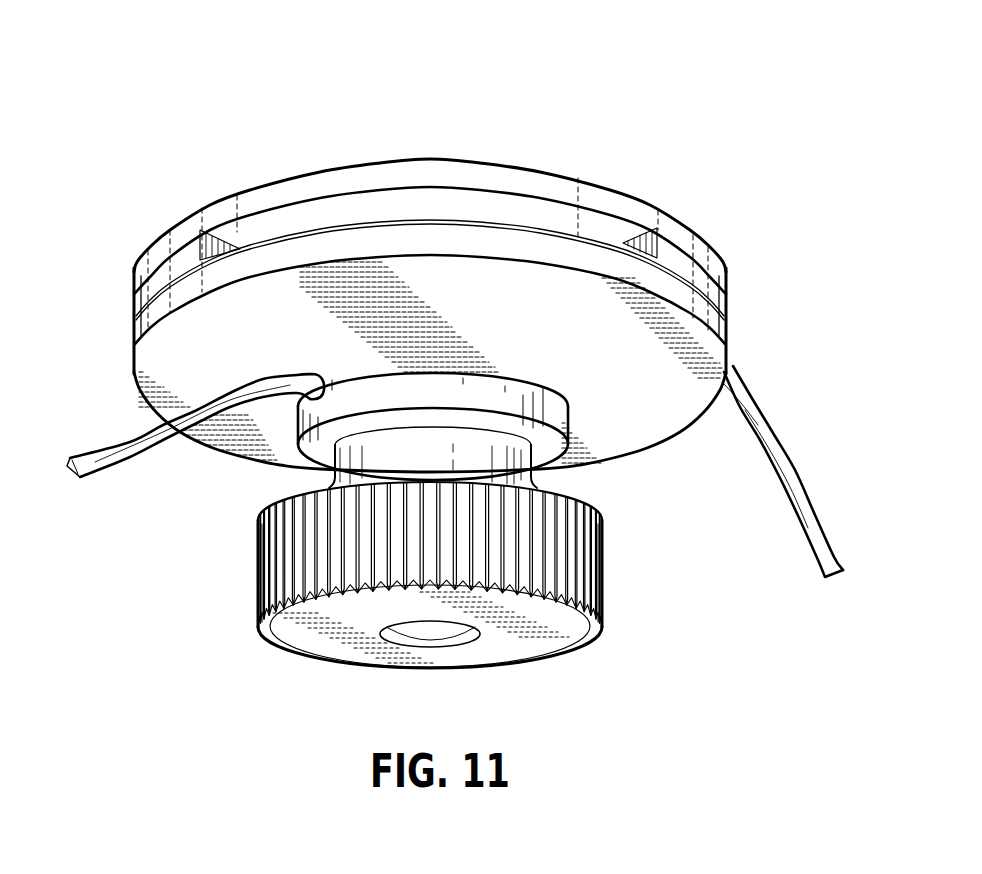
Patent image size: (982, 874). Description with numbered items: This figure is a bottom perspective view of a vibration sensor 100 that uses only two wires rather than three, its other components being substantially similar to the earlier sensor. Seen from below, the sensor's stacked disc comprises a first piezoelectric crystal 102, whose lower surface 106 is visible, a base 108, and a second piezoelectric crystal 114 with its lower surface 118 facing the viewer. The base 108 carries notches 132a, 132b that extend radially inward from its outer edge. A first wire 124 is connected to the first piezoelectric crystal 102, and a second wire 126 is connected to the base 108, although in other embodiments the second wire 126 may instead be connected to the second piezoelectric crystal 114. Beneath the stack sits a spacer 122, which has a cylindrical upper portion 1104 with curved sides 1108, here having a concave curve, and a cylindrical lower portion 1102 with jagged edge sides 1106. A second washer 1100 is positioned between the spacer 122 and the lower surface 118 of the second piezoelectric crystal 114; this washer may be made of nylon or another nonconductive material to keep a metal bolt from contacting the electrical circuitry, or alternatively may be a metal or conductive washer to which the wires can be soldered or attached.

The vibration sensor 100 is at (258, 70).
The first piezoelectric crystal 102 is at (266, 192).
The lower surface 106 is at (630, 227).
The base 108 is at (717, 293).
The second piezoelectric crystal 114 is at (133, 327).
The lower surface 118 is at (133, 373).
The spacer 122 is at (256, 581).
The first wire 124 is at (795, 498).
The second wire 126 is at (97, 473).
The notch 132a is at (200, 238).
The notch 132b is at (638, 232).
The second washer 1100 is at (282, 463).
The lower portion 1102 is at (556, 650).
The upper portion 1104 is at (500, 473).
The jagged edge sides 1106 is at (600, 574).
The curved sides 1108 is at (335, 468).